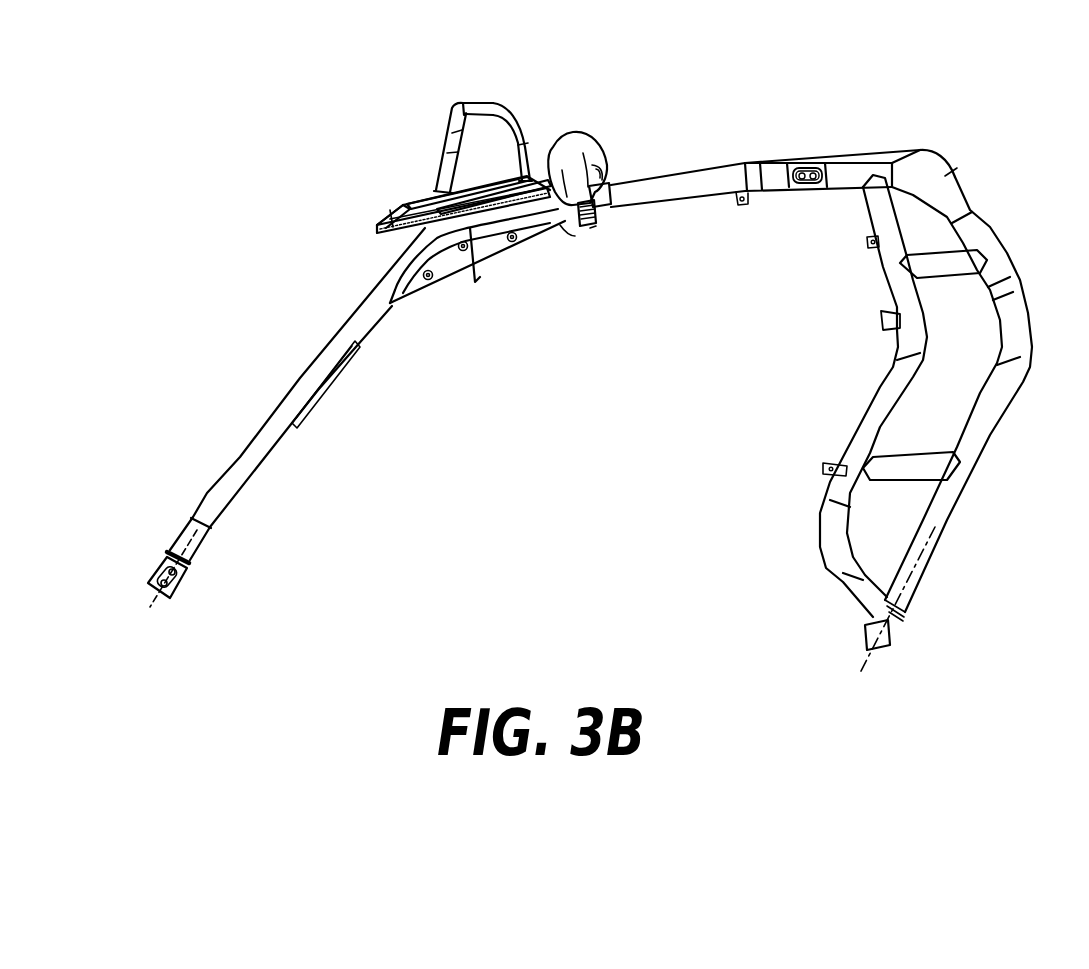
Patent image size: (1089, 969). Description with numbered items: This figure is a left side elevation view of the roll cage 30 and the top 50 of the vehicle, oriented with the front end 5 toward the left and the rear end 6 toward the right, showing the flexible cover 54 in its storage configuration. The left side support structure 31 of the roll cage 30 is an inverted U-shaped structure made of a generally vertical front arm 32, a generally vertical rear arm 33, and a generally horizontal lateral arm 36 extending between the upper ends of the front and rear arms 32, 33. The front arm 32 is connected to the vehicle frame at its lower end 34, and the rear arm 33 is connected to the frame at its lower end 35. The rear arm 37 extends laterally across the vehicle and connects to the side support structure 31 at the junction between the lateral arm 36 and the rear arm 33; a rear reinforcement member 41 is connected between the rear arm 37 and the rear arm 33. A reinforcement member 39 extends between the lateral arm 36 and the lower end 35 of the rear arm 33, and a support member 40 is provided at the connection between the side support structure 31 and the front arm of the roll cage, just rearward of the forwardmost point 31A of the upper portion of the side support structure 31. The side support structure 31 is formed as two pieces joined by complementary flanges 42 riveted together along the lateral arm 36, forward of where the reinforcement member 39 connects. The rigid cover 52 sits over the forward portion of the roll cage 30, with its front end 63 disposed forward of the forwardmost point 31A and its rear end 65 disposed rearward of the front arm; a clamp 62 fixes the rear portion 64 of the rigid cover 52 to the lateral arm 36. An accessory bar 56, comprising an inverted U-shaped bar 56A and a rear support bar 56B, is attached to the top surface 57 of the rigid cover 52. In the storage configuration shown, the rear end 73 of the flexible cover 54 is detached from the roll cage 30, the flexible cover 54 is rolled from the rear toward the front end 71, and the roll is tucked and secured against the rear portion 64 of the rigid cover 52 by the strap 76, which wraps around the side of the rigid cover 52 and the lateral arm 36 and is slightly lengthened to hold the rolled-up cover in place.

The front end 5 is at (212, 188).
The rear end 6 is at (995, 106).
The roll cage 30 is at (254, 324).
The side support structure 31 is at (266, 447).
The forwardmost point of the upper portion of the side support structure 31A is at (425, 230).
The front arm 32 is at (302, 388).
The rear arm 33 is at (980, 240).
The lower end of front arm 34 is at (185, 583).
The lower end of rear arm 35 is at (863, 627).
The lateral arm 36 is at (695, 190).
The rear arm 37 is at (923, 157).
The reinforcement member 39 is at (887, 403).
The support member 40 is at (478, 278).
The rear reinforcement member 41 is at (950, 178).
The complementary flanges 42 is at (803, 160).
The top 50 is at (396, 107).
The rigid cover 52 is at (440, 196).
The flexible cover 54 is at (577, 137).
The accessory bar 56 is at (496, 108).
The inverted U-shaped bar 56A is at (440, 92).
The rear support bar 56B is at (527, 135).
The top surface 57 is at (402, 206).
The clamp 62 is at (597, 195).
The front end of rigid cover 63 is at (378, 214).
The rear portion of top surface 64 is at (624, 169).
The rear end of rigid cover 65 is at (620, 185).
The front end of flexible cover 71 is at (560, 225).
The rear end of flexible cover 73 is at (610, 133).
The strap 76 is at (590, 228).